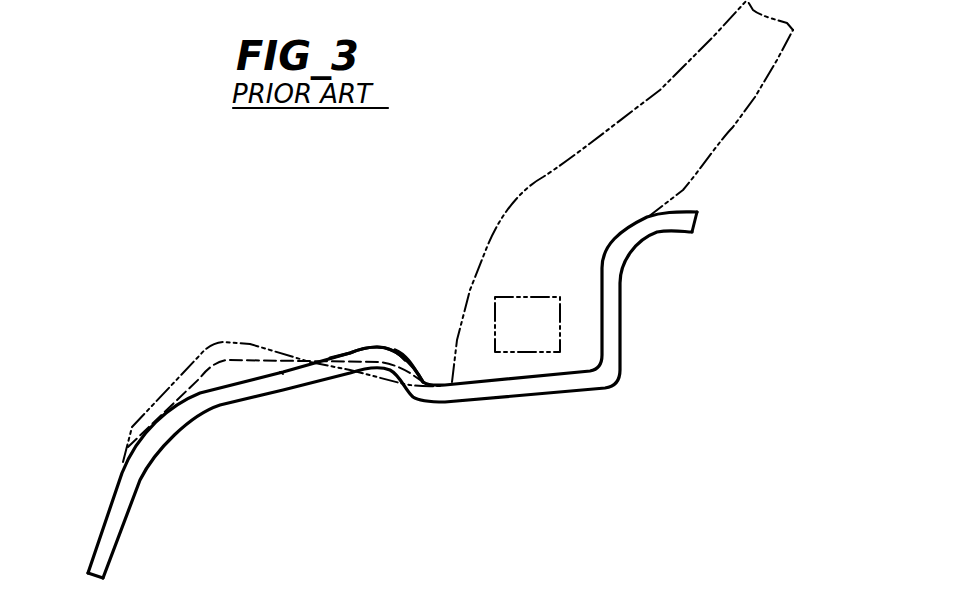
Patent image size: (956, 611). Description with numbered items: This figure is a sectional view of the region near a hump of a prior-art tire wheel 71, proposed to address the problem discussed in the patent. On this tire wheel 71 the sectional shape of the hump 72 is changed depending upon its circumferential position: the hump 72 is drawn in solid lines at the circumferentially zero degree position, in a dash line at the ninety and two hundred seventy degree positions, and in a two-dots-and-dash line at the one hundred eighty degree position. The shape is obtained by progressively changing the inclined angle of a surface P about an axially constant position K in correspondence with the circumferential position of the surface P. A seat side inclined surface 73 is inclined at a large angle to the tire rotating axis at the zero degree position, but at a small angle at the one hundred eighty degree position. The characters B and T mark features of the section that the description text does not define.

The tire wheel 71 is at (615, 380).
The hump 72 is at (362, 350).
The seat side inclined surface 73 is at (415, 360).
The vehicle body panel B is at (470, 322).
The trim / pillar garnish T is at (623, 130).
The axially constant position K is at (313, 362).
The surface P is at (284, 370).